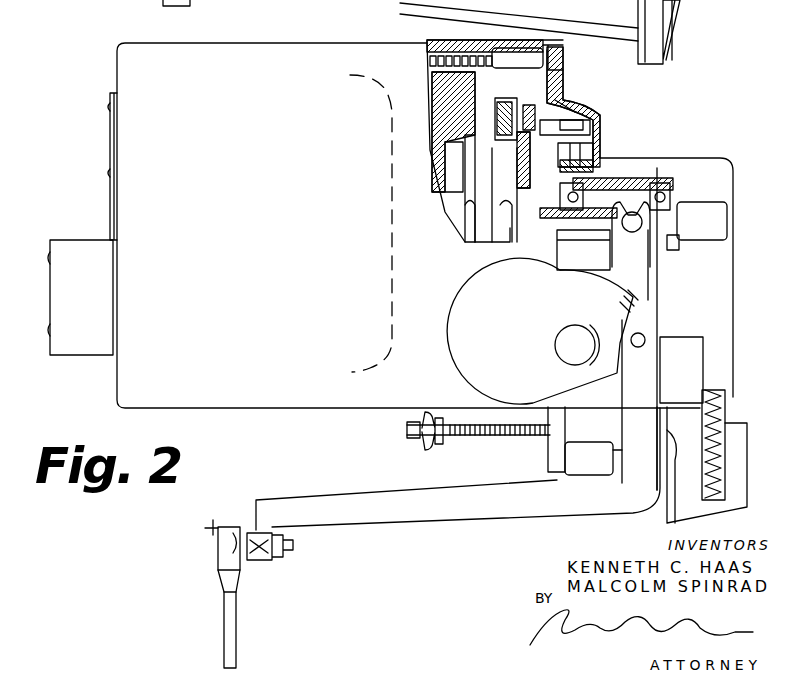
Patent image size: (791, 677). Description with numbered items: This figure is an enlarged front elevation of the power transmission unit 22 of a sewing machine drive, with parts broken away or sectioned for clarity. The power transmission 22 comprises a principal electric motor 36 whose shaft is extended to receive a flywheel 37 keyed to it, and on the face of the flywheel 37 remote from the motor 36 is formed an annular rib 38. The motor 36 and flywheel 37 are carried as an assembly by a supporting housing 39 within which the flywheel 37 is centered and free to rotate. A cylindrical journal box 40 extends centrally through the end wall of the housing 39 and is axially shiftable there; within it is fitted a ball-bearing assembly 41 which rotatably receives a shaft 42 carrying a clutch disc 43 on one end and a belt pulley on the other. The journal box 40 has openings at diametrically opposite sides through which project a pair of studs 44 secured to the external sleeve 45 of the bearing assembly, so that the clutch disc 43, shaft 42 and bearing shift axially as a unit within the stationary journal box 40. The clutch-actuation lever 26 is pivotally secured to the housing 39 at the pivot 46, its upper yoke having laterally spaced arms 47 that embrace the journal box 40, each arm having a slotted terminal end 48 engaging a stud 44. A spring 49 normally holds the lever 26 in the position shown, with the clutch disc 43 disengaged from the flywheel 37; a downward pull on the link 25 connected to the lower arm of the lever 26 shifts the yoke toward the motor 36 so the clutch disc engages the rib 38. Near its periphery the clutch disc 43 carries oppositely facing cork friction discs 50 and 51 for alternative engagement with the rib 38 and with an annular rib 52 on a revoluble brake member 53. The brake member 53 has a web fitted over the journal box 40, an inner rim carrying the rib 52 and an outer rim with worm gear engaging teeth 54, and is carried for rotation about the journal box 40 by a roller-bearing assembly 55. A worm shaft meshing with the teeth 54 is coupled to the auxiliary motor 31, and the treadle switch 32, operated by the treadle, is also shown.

The power transmission unit 22 is at (271, 185).
The link 25 is at (235, 604).
The clutch-actuation lever 26 is at (440, 513).
The auxiliary motor 31 is at (527, 302).
The treadle switch 32 is at (585, 470).
The principal electric motor 36 is at (393, 293).
The flywheel 37 is at (445, 90).
The annular rib 38 is at (440, 123).
The supporting housing 39 is at (587, 103).
The journal box 40 is at (673, 171).
The ball-bearing assembly 41 is at (670, 185).
The shaft 42 is at (677, 220).
The clutch disc 43 is at (506, 104).
The studs 44 is at (629, 237).
The external sleeve 45 is at (672, 241).
The pivot 46 is at (645, 338).
The arms 47 is at (633, 282).
The slotted terminal end 48 is at (612, 238).
The spring 49 is at (503, 438).
The annular friction disc 50 is at (492, 112).
The annular friction disc 51 is at (527, 108).
The annular rib 52 is at (560, 100).
The revoluble brake member 53 is at (600, 133).
The worm gear engaging teeth 54 is at (590, 118).
The roller-bearing assembly 55 is at (600, 150).